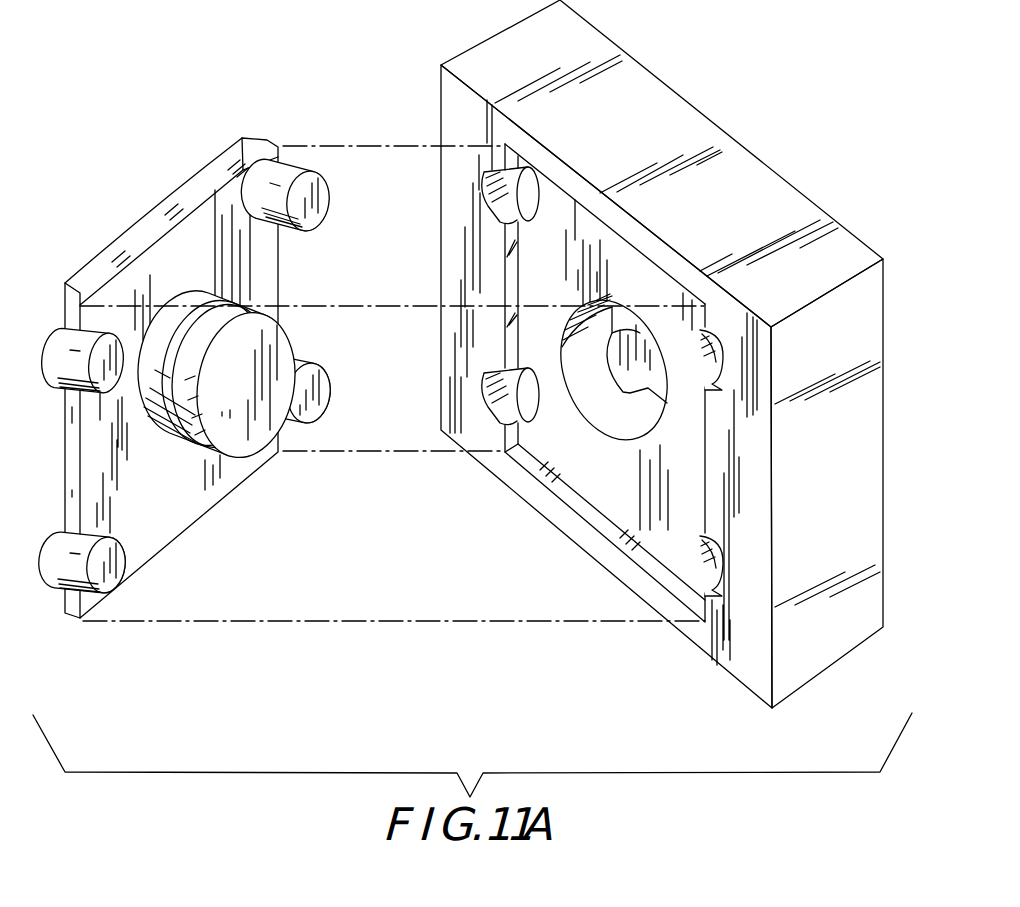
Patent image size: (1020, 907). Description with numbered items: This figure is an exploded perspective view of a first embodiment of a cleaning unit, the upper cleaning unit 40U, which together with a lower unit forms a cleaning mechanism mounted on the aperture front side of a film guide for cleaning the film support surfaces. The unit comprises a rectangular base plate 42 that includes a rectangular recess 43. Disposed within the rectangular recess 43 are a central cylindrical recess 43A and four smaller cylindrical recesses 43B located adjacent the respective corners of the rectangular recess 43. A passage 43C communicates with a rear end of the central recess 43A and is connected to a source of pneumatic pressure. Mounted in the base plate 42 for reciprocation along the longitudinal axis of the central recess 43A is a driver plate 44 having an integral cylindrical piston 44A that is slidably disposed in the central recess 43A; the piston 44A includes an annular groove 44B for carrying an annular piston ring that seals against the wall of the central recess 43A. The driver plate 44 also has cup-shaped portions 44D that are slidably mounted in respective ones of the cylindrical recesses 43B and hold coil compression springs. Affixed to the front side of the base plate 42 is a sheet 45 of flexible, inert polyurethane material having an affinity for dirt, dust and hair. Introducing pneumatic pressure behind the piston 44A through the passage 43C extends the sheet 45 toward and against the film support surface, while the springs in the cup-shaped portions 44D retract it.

The upper cleaning unit 40U is at (309, 46).
The rectangular base plate 42 is at (827, 657).
The rectangular recess 43 is at (660, 548).
The central cylindrical recess 43A is at (628, 382).
The cylindrical recess 43B is at (487, 207).
The passage 43C is at (590, 428).
The driver plate 44 is at (148, 543).
The cylindrical piston 44A is at (260, 433).
The annular groove 44B is at (185, 442).
The cup-shaped portion 44D is at (298, 163).
The sheet 45 is at (147, 207).